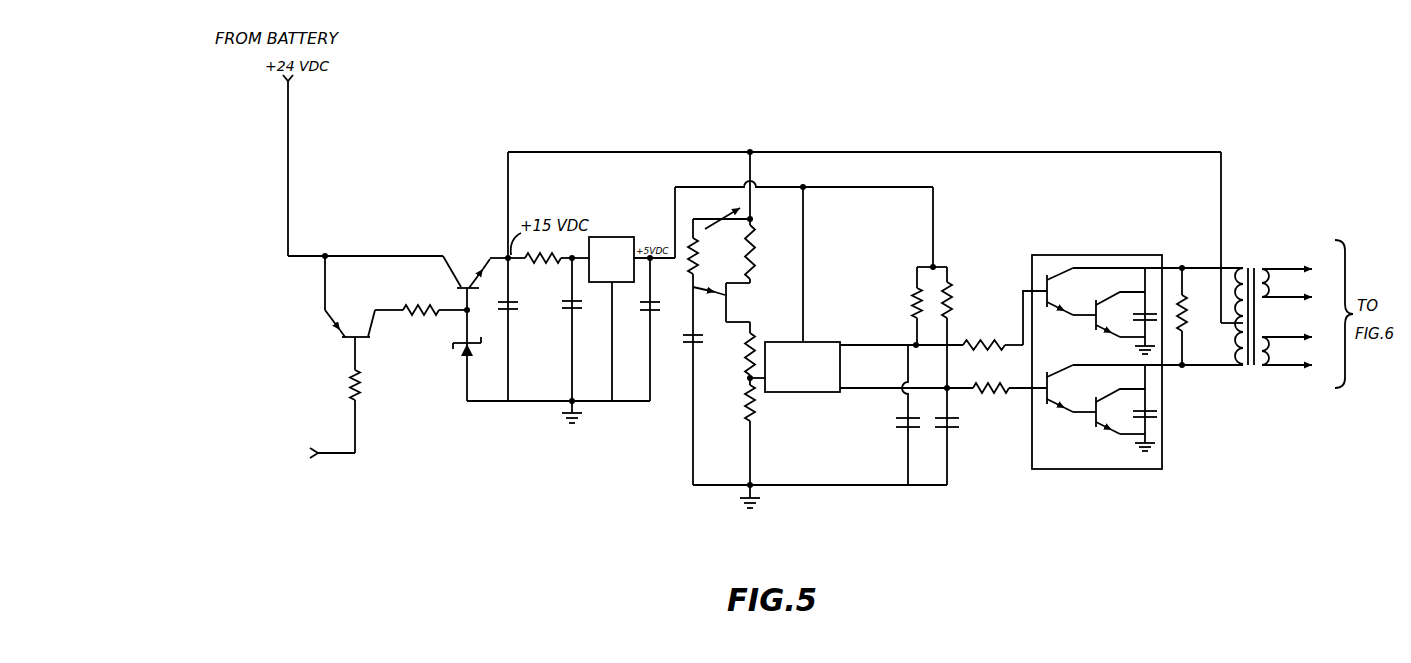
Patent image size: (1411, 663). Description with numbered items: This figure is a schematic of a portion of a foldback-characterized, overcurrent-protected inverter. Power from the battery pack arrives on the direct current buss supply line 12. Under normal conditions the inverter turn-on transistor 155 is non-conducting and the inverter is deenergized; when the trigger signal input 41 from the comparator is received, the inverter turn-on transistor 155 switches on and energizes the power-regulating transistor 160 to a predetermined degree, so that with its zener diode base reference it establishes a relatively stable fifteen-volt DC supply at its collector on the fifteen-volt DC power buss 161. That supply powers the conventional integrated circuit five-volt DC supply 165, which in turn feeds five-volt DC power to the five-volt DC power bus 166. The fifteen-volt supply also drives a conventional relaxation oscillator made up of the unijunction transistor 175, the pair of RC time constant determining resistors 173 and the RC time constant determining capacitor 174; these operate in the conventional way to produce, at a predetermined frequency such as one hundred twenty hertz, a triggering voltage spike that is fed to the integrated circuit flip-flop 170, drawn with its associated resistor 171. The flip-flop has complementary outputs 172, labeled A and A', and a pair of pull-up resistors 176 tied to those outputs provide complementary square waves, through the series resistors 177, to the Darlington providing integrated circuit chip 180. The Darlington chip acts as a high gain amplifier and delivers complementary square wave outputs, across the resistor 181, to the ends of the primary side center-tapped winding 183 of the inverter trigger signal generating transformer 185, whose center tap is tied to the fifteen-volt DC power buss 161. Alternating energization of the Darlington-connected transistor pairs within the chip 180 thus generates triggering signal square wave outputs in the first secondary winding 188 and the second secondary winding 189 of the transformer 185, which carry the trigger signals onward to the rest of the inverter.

The direct current buss supply line 12 is at (300, 168).
The trigger signal input 41 is at (328, 455).
The inverter turn-on transistor 155 is at (360, 340).
The power-regulating transistor 160 is at (457, 288).
The +15-volt DC power buss 161 is at (910, 152).
The type 7805 integrated circuit 5-volt DC supply 165 is at (612, 237).
The +5-volt DC power bus 166 is at (826, 186).
The integrated circuit flip-flop 170 is at (778, 397).
The resistor 171 is at (753, 373).
The complementary outputs 172 is at (851, 347).
The RC time constant determining resistors 173 is at (726, 228).
The RC time constant determining capacitor 174 is at (683, 342).
The unijunction transistor 175 is at (714, 322).
The pull-up resistors 176 is at (935, 269).
The resistors 177 is at (983, 348).
The Darlington providing integrated circuit chip 180 is at (1092, 469).
The resistor 181 is at (1186, 332).
The primary side center-tapped winding 183 is at (1243, 268).
The inverter trigger signal generating transformer 185 is at (1247, 325).
The first secondary winding 188 is at (1266, 269).
The second secondary winding 189 is at (1261, 337).